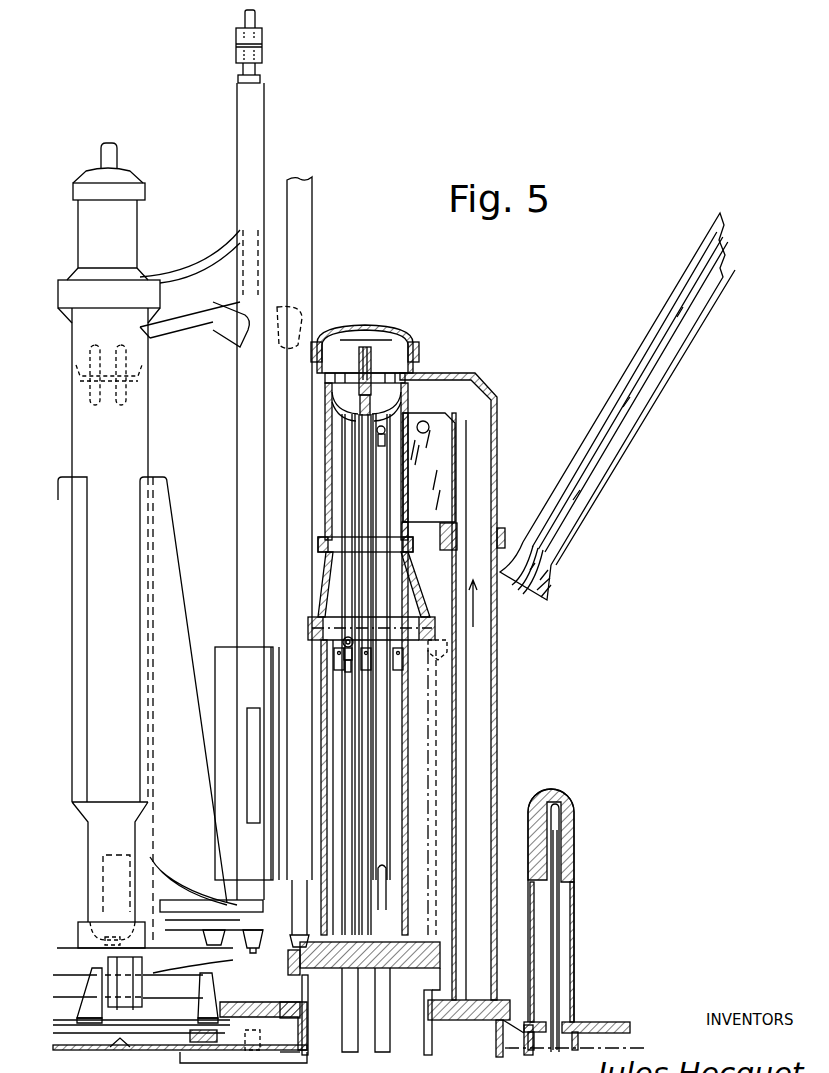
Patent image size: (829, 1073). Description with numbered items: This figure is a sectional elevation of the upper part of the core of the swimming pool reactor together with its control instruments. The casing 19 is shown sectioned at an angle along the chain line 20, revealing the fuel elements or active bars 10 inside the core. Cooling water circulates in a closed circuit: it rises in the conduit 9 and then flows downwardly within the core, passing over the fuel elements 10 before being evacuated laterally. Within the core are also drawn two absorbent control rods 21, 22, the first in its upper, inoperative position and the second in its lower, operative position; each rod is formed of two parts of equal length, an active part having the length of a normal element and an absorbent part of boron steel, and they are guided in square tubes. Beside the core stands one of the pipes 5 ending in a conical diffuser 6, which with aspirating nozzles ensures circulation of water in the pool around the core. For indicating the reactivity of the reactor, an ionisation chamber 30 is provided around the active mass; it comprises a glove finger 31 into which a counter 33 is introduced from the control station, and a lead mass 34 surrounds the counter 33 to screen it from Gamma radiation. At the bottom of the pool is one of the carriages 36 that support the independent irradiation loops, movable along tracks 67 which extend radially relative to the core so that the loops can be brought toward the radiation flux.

The pipe 5 is at (588, 456).
The conical diffuser 6 is at (552, 573).
The conduit 9 is at (492, 655).
The fuel element 10 is at (408, 697).
The casing 19 is at (330, 768).
The chain line 20 is at (428, 741).
The absorbent control rod 21 is at (387, 479).
The absorbent control rod 22 is at (346, 636).
The ionisation chamber 30 is at (577, 807).
The glove finger 31 is at (558, 917).
The counter 33 is at (553, 793).
The lead mass 34 is at (567, 838).
The carriage 36 is at (66, 948).
The track 67 is at (185, 990).